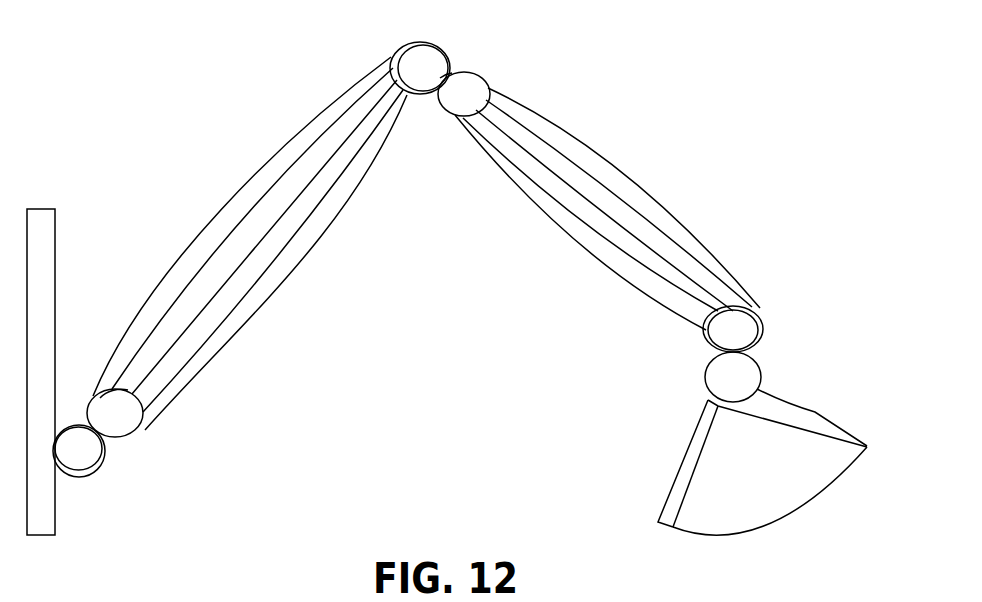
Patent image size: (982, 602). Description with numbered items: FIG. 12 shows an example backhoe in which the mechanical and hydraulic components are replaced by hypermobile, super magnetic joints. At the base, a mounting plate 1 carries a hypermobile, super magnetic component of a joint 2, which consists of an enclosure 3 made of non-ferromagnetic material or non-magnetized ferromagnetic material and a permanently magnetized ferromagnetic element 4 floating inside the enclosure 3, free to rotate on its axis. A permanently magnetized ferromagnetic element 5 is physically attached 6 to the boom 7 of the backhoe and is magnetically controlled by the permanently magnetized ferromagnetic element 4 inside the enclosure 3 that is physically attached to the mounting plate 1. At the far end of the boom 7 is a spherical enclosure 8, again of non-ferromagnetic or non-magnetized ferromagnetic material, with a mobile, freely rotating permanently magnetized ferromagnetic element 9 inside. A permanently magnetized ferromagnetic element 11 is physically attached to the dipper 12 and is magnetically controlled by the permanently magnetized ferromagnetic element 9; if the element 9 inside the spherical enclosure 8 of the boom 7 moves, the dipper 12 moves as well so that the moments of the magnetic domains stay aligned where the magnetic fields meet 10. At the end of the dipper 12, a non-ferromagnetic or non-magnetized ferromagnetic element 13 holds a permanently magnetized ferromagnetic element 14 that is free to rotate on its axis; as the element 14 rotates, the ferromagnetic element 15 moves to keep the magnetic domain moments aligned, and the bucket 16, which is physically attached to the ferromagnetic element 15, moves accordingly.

The base / mounting wall 1 is at (58, 483).
The hypermobile, super magnetic component of a joint 2 is at (116, 484).
The enclosure 3 is at (87, 474).
The permanently magnetized ferromagnetic element 4 is at (84, 450).
The permanently magnetized ferromagnetic element 5 is at (120, 410).
The physical attachment 6 is at (123, 387).
The boom 7 is at (244, 252).
The spherical enclosure 8 is at (415, 43).
The permanently magnetized ferromagnetic element 9 is at (426, 67).
The meeting point of magnetic fields 10 is at (453, 72).
The permanently magnetized ferromagnetic element 11 is at (469, 96).
The dipper 12 is at (583, 196).
The non-ferromagnetic or non-magnetized ferromagnetic element 13 is at (729, 304).
The permanently magnetized ferromagnetic element 14 is at (736, 323).
The ferromagnetic element 15 is at (734, 377).
The bucket 16 is at (671, 457).